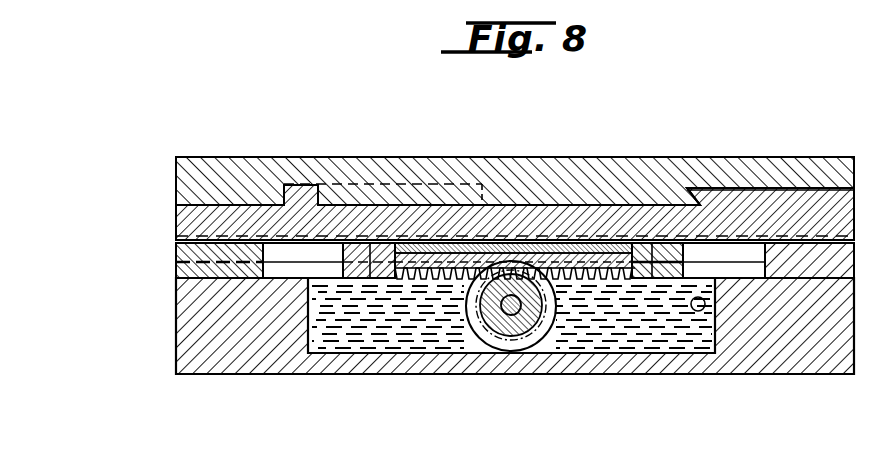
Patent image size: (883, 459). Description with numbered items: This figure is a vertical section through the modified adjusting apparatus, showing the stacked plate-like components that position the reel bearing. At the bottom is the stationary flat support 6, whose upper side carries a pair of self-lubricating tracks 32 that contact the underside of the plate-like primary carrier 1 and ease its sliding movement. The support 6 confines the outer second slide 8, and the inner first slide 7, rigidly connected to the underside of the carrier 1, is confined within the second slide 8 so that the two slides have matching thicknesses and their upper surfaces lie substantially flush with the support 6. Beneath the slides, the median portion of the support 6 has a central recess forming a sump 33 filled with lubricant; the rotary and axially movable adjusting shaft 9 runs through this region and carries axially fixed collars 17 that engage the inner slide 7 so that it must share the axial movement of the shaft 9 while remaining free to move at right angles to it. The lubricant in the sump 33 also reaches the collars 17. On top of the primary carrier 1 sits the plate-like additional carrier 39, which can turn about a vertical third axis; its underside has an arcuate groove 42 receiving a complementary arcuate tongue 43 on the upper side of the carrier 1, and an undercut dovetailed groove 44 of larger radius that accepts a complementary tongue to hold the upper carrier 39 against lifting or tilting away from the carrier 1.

The carrier 1 is at (641, 215).
The support 6 is at (236, 355).
The first slide 7 is at (512, 245).
The second slide 8 is at (370, 250).
The adjusting shaft 9 is at (515, 312).
The collars 17 is at (480, 333).
The tracks 32 is at (185, 253).
The sump 33 is at (367, 345).
The additional carrier 39 is at (597, 182).
The arcuate groove 42 is at (318, 205).
The arcuate tongue 43 is at (296, 190).
The undercut groove 44 is at (700, 207).